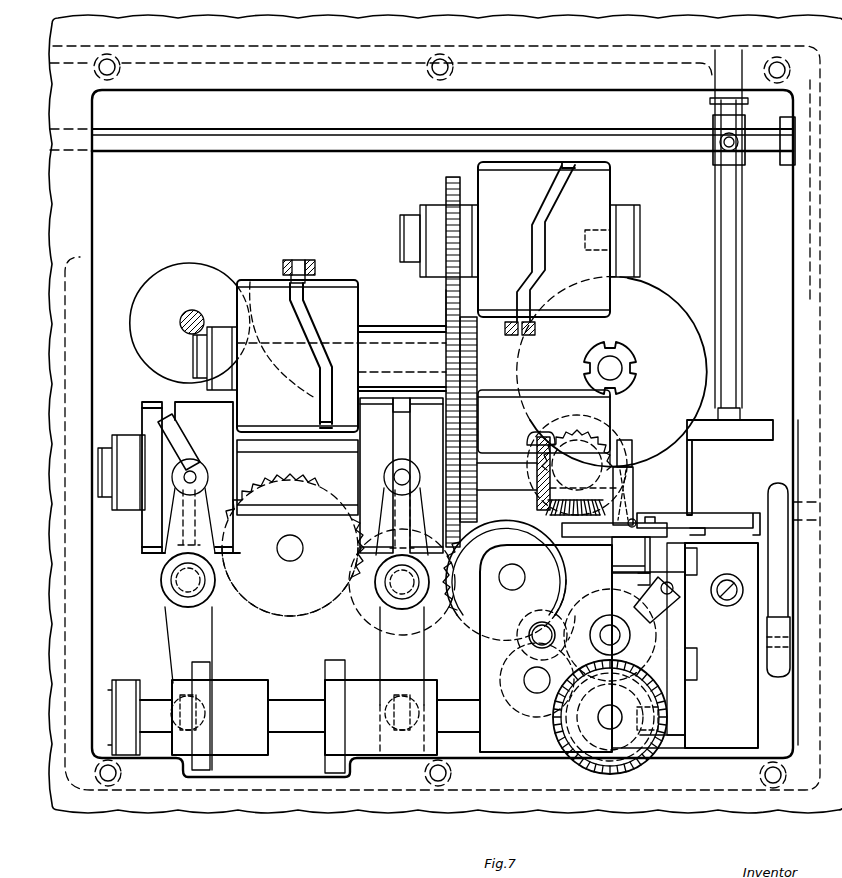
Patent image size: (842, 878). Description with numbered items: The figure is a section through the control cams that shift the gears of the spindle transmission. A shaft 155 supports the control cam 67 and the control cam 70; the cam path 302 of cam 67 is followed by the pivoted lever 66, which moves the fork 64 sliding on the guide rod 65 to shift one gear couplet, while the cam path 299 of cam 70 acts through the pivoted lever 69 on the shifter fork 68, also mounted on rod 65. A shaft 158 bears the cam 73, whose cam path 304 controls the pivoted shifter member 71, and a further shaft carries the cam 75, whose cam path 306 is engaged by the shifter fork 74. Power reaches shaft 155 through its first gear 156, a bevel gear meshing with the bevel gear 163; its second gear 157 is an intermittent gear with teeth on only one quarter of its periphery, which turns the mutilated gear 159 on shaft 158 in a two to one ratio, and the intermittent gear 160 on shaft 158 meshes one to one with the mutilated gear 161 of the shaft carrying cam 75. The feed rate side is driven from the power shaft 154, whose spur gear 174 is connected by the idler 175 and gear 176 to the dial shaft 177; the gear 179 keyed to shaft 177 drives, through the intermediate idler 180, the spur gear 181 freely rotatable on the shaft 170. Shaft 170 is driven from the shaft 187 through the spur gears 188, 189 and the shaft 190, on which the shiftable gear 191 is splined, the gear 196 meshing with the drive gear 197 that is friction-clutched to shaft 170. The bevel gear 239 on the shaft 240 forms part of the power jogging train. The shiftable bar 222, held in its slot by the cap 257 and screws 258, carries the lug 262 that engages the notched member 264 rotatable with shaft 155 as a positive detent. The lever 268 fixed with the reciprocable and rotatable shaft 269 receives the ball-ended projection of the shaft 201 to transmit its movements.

The shaft 269 is at (538, 141).
The lever 268 is at (713, 130).
The shaft 201 is at (726, 234).
The mutilated gear 161 is at (446, 188).
The cam path 306 is at (548, 200).
The cam 75 is at (600, 196).
The shifter fork 74 is at (537, 330).
The intermittent gear 160 is at (450, 312).
The mutilated gear 159 is at (472, 328).
The shaft 158 is at (398, 336).
The control cam 67 is at (362, 390).
The cam 73 is at (318, 286).
The cam path 304 is at (323, 322).
The shifter member 71 is at (311, 266).
The spur gear 174 is at (196, 270).
The power shaft 154 is at (196, 309).
The idler 175 is at (284, 360).
The control cam 70 is at (146, 404).
The cam path 299 is at (160, 432).
The pivoted lever 69 is at (204, 629).
The pivoted lever 66 is at (386, 640).
The cam path 302 is at (401, 475).
The shaft 155 is at (342, 488).
The gear 176 is at (300, 487).
The intermediate idler 180 is at (356, 618).
The dial shaft 177 is at (288, 560).
The gear 179 is at (300, 616).
The shifter fork 68 is at (212, 748).
The fork 64 is at (378, 742).
The guide rod 65 is at (446, 708).
The bevel gear 163 is at (541, 520).
The first gear 156 is at (532, 510).
The second gear 157 is at (468, 517).
The spur gear 181 is at (459, 622).
The member 264 is at (628, 440).
The lug 262 is at (634, 480).
The cap 257 is at (640, 513).
The screws 258 is at (647, 520).
The shiftable bar 222 is at (618, 545).
The spur gear 189 is at (600, 594).
The shaft 170 is at (514, 575).
The drive gear 197 is at (578, 556).
The shiftable gear 191 is at (584, 578).
The spur gear 188 is at (543, 622).
The shaft 187 is at (530, 634).
The shaft 190 is at (612, 627).
The gear 196 is at (522, 714).
The bevel gear 239 is at (552, 730).
The shaft 240 is at (600, 722).